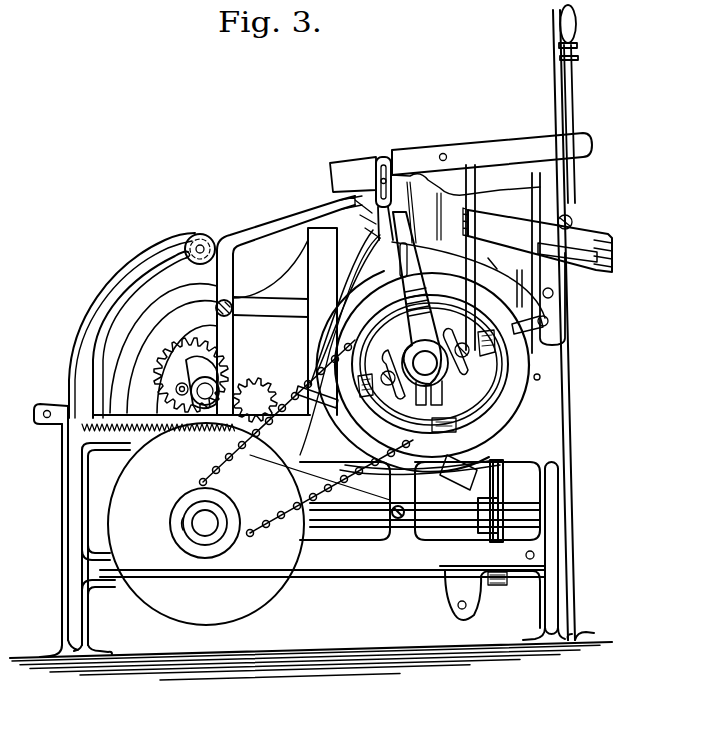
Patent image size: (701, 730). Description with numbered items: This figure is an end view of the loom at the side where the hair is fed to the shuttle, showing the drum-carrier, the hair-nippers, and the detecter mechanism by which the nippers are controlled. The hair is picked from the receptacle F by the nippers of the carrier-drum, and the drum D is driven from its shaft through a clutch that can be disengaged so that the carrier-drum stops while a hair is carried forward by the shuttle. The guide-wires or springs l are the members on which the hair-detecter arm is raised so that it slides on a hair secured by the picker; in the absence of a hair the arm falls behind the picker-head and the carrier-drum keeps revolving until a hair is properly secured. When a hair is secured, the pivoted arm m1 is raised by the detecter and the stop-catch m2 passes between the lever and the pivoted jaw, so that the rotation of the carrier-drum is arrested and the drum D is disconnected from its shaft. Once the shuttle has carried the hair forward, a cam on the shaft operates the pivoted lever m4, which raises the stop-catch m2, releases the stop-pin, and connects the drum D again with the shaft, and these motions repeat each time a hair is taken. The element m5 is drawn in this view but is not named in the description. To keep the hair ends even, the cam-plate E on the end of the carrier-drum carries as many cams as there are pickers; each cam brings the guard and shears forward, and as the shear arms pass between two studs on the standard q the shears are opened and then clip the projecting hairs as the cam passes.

The pivoted lever m4 is at (289, 305).
The gear m5 is at (215, 380).
The stop-catch m2 is at (360, 197).
The pivoted arm m1 is at (492, 256).
The drum D is at (206, 524).
The cam-plate E is at (423, 371).
The standard q is at (413, 306).
The receptacle F is at (537, 240).
The guide-wires or springs l is at (436, 444).